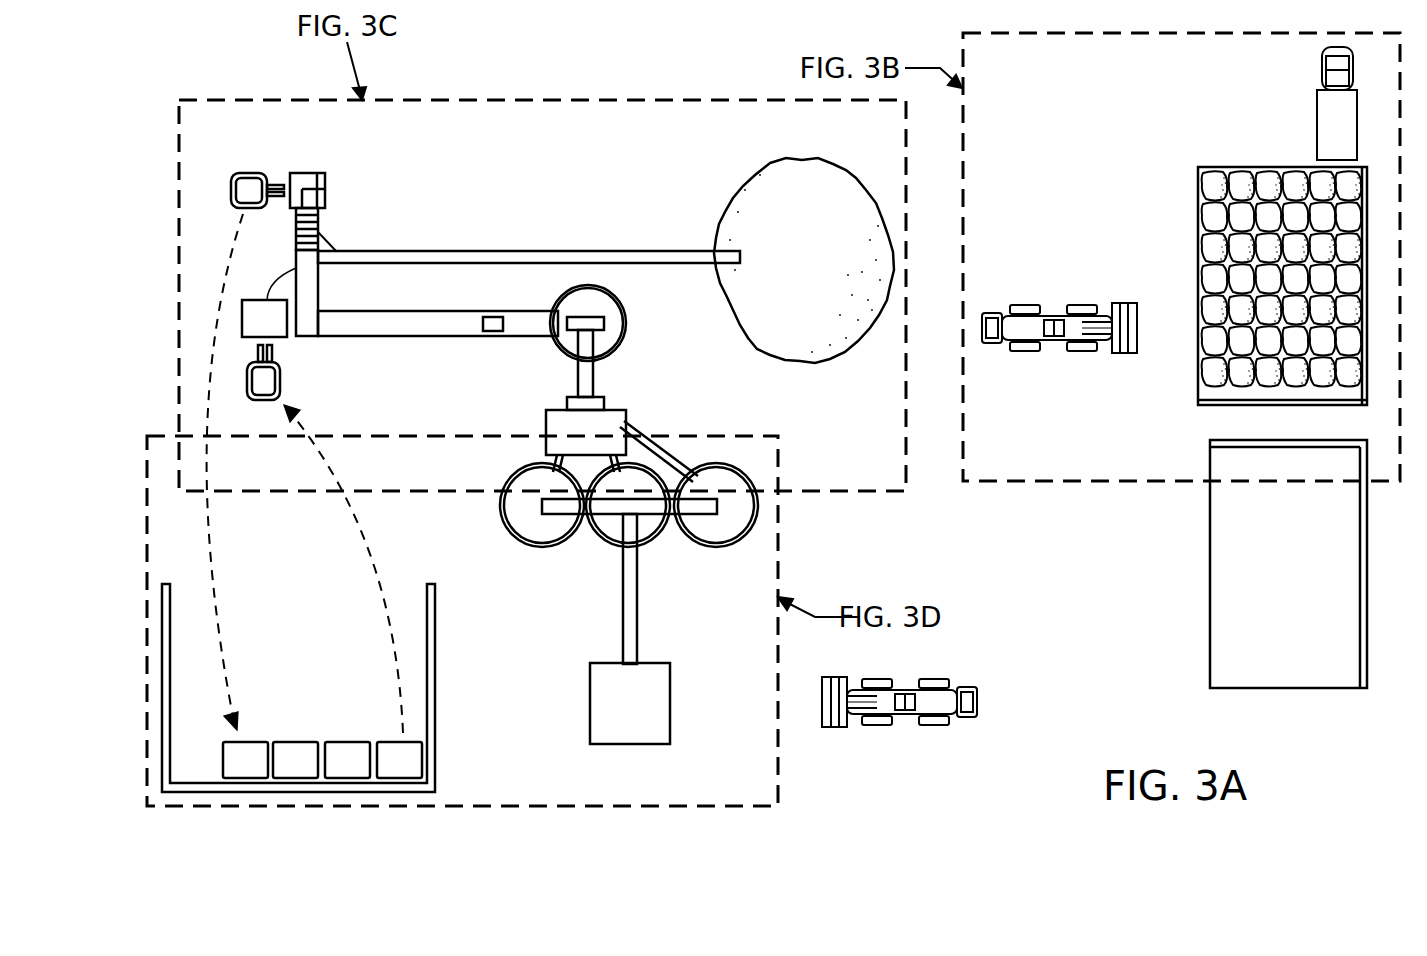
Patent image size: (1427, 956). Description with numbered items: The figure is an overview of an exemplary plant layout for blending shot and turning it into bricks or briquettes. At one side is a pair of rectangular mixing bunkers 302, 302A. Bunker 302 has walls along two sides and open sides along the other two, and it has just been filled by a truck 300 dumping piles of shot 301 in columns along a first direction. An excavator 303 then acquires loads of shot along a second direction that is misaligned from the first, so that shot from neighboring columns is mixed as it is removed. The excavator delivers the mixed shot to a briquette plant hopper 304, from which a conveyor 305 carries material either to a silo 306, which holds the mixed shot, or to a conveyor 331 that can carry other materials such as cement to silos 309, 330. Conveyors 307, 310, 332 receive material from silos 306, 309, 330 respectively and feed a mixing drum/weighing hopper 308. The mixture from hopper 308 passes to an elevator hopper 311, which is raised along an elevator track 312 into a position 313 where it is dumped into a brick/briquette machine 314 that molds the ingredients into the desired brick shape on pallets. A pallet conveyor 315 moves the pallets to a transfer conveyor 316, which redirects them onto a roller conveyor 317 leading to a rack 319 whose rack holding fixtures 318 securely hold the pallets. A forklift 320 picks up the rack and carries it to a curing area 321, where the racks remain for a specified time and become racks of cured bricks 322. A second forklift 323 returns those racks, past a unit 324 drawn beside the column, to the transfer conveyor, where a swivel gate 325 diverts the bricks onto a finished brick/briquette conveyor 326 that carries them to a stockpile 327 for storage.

The truck 300 is at (1317, 126).
The piles of shot 301 is at (1193, 142).
The mixing bunker 302 is at (1216, 422).
The mixing bunker 302A is at (1255, 581).
The excavator 303 is at (1050, 305).
The briquette plant hopper 304 is at (670, 703).
The conveyor 305 is at (622, 618).
The silo 306 is at (655, 544).
The conveyor 307 is at (600, 463).
The mixing drum/weighing hopper 308 is at (546, 425).
The silo 309 is at (502, 512).
The conveyor 310 is at (540, 460).
The elevator hopper 311 is at (567, 402).
The vertical rod 312 is at (594, 372).
The position 313 is at (606, 325).
The brick/briquette machine 314 is at (622, 306).
The pallet conveyor 315 is at (435, 337).
The transfer conveyor 316 is at (320, 293).
The roller conveyor 317 is at (312, 218).
The rack holding fixtures 318 is at (318, 180).
The rack 319 is at (306, 173).
The forklift 320 is at (245, 173).
The curing area 321 is at (437, 685).
The racks of cured bricks 322 is at (310, 698).
The forklift 323 is at (265, 403).
The control box 324 is at (280, 338).
The swivel gate 325 is at (328, 243).
The finished brick/briquette conveyor 326 is at (510, 250).
The stockpile 327 is at (828, 160).
The silo 330 is at (713, 547).
The conveyor 331 is at (552, 516).
The conveyor 332 is at (640, 427).